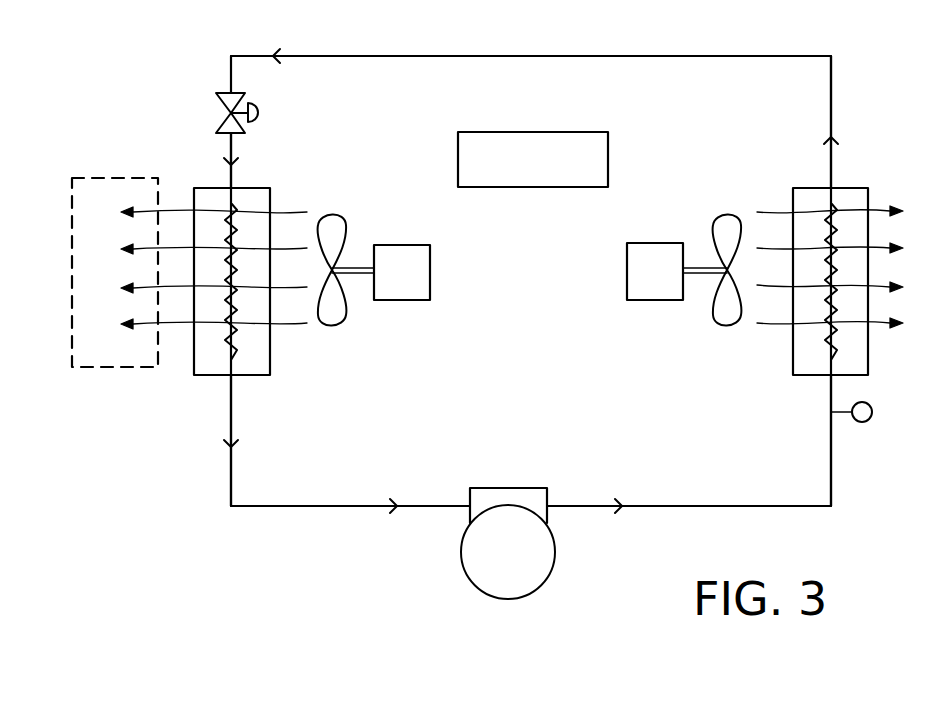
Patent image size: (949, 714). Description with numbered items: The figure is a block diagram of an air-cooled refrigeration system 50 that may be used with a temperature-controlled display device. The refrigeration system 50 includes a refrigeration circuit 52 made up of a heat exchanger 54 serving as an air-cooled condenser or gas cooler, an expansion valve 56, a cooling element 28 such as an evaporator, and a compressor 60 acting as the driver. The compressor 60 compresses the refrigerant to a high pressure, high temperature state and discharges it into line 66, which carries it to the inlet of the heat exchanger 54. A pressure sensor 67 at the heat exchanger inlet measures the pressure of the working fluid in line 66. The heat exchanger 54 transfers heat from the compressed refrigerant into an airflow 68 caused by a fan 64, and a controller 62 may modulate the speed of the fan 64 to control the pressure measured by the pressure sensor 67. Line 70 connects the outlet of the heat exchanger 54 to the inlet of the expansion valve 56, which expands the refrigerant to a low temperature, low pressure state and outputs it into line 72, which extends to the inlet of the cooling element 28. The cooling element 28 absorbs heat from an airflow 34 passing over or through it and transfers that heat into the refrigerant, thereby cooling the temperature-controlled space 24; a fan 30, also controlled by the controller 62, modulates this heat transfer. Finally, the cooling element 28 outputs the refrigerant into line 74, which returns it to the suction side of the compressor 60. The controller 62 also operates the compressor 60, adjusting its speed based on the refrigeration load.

The refrigeration system 50 is at (110, 114).
The temperature-controlled space 24 is at (80, 185).
The cooling element 28 is at (265, 196).
The fan 30 is at (420, 250).
The airflow 34 is at (290, 326).
The refrigeration circuit 52 is at (531, 281).
The heat exchanger 54 is at (862, 195).
The expansion valve 56 is at (258, 105).
The compressor 60 is at (539, 497).
The controller 62 is at (598, 178).
The fan 64 is at (675, 250).
The line 66 is at (680, 505).
The pressure sensor 67 is at (873, 413).
The airflow 68 is at (775, 212).
The line 70 is at (768, 55).
The line 72 is at (229, 152).
The line 74 is at (229, 497).